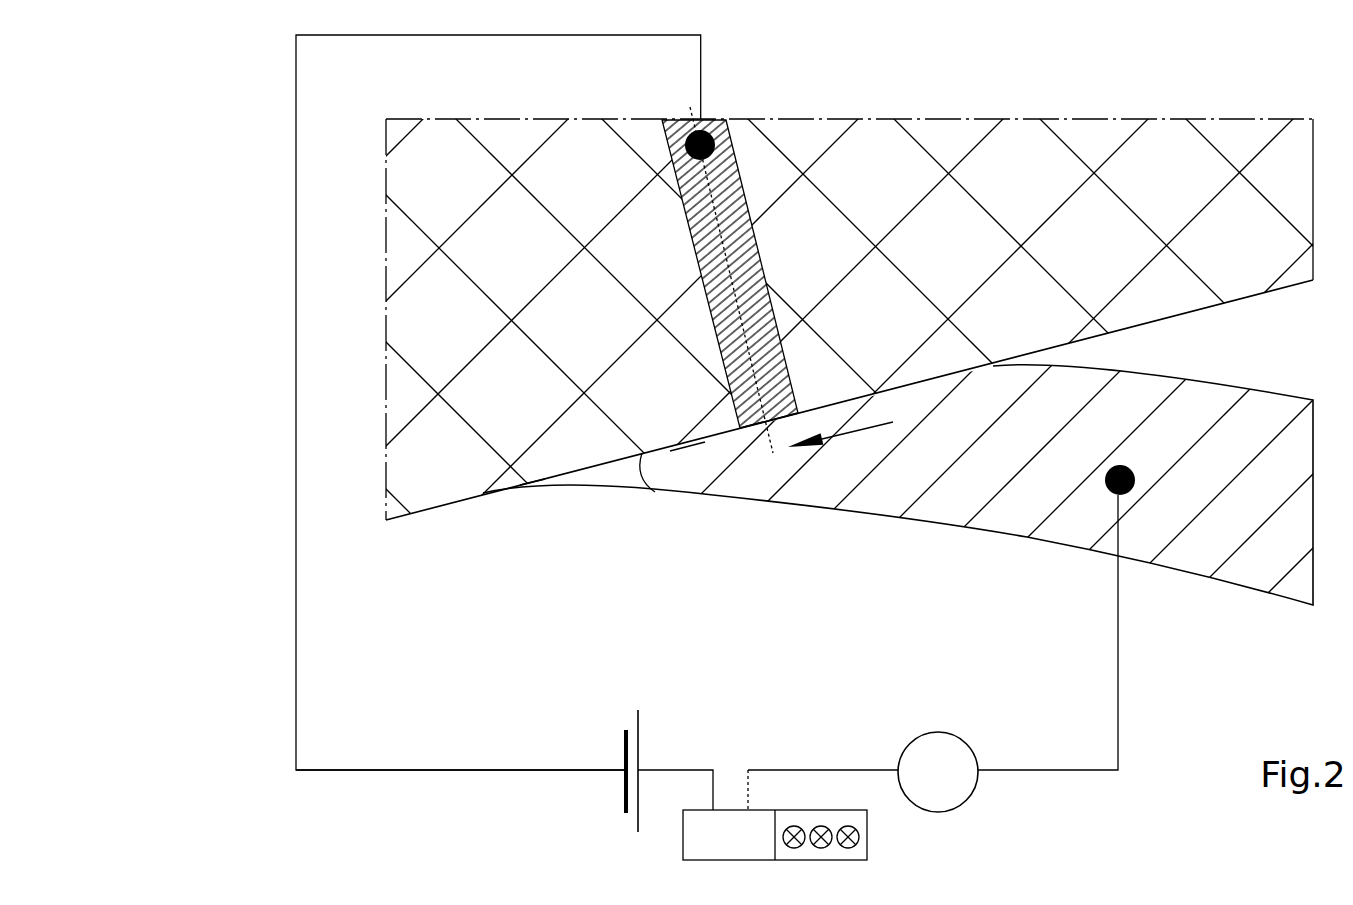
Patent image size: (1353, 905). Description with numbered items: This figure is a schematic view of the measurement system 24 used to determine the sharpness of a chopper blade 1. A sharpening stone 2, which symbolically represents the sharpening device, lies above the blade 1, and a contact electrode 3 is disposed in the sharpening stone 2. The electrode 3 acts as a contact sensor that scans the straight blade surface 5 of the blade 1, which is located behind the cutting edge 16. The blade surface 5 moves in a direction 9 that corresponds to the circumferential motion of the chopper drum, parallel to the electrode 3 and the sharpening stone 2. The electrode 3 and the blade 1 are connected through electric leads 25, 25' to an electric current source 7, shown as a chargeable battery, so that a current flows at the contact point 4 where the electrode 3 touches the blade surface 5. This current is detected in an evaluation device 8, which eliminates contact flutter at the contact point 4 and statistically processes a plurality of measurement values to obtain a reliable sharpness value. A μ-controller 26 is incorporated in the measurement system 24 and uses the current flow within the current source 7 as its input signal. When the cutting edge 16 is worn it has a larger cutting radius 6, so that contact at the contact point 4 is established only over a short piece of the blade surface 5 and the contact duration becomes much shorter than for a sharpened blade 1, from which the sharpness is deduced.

The chopper blade 1 is at (938, 508).
The sharpening stone 2 is at (1026, 165).
The contact electrode 3 is at (750, 122).
The contact point 4 is at (753, 428).
The blade surface 5 is at (687, 447).
The cutting radius 6 is at (640, 456).
The electric current source 7 is at (622, 752).
The evaluation device 8 is at (970, 743).
The direction 9 is at (852, 433).
The cutting edge 16 is at (532, 487).
The measurement system 24 is at (232, 718).
The electric lead 25 is at (461, 813).
The electric lead 25' is at (1104, 617).
The μ-controller 26 is at (693, 843).